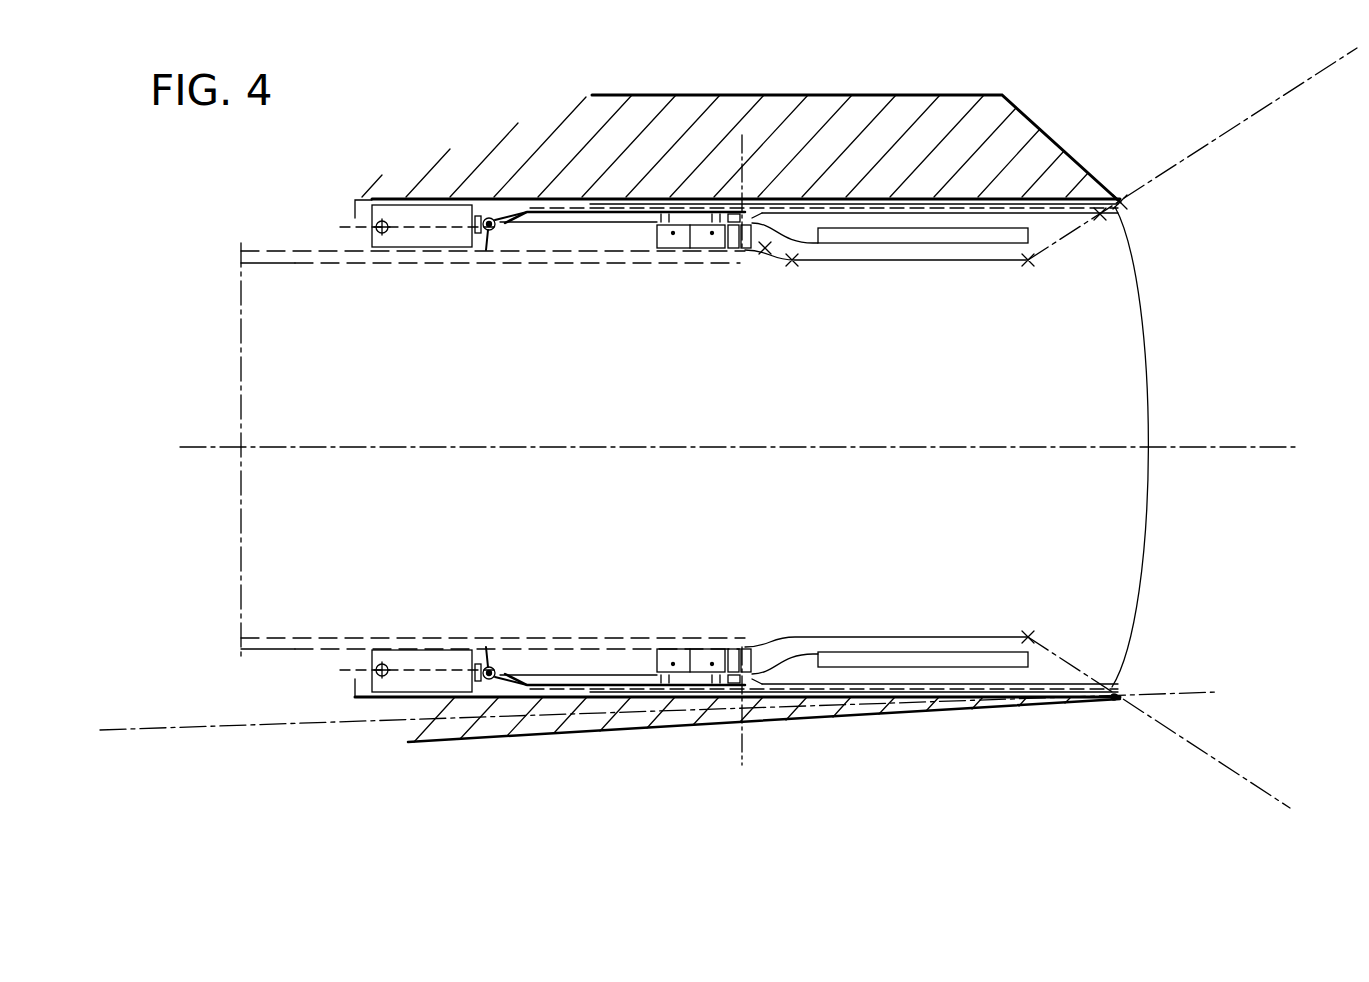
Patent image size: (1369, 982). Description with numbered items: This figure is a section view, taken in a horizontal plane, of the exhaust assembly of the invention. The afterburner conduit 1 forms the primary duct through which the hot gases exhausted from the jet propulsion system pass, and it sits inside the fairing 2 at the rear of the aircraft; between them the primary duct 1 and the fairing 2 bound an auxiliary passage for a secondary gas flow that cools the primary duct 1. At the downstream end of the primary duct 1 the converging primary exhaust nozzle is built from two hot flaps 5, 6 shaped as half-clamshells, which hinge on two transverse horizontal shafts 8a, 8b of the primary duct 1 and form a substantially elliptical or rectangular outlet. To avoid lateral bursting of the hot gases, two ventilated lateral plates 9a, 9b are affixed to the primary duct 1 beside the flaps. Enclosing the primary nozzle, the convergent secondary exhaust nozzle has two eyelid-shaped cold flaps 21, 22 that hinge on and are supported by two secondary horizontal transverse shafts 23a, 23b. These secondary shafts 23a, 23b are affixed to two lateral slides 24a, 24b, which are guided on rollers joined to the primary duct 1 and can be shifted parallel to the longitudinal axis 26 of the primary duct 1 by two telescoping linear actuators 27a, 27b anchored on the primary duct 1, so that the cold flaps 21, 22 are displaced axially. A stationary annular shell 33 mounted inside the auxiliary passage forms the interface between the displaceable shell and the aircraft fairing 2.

The afterburner conduit 1 is at (280, 645).
The fairing 2 is at (592, 723).
The hot flap 5 is at (931, 448).
The hot flap 6 is at (875, 250).
The transverse horizontal shaft 8a is at (744, 250).
The transverse horizontal shaft 8b is at (745, 672).
The ventilated lateral plate 9a is at (1013, 237).
The ventilated lateral plate 9b is at (1002, 658).
The cold flap 21 is at (840, 440).
The cold flap 22 is at (1062, 212).
The secondary horizontal transverse shaft 23a is at (742, 213).
The secondary horizontal transverse shaft 23b is at (748, 686).
The lateral slide 24a is at (562, 684).
The lateral slide 24b is at (573, 222).
The longitudinal axis 26 is at (1023, 447).
The telescoping linear actuator 27a is at (418, 658).
The telescoping linear actuator 27b is at (410, 236).
The stationary annular shell 33 is at (528, 240).